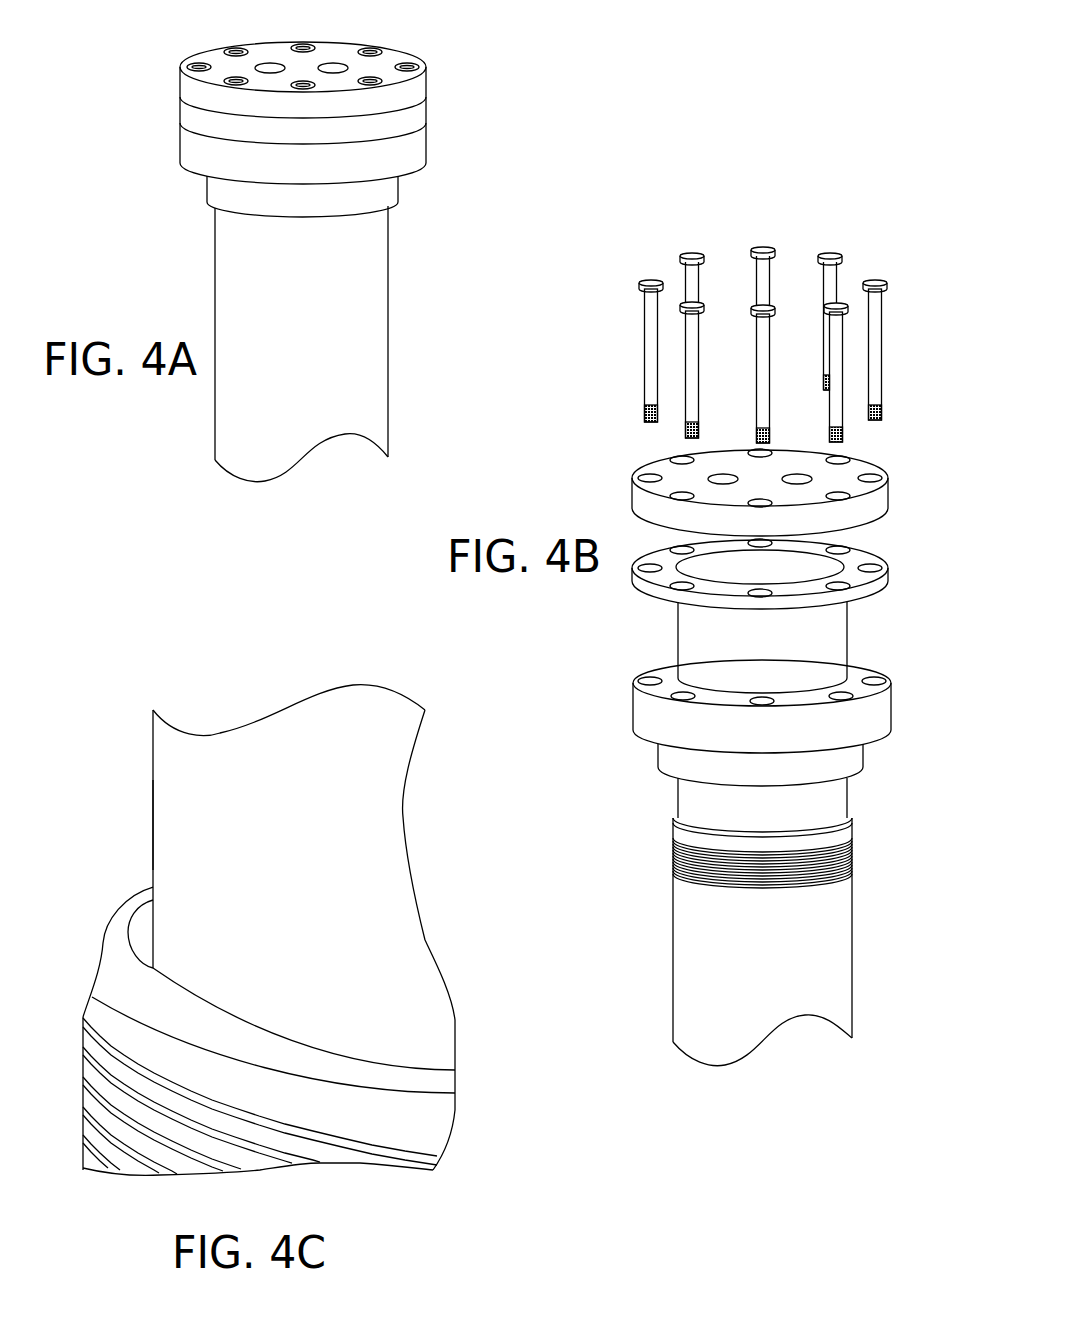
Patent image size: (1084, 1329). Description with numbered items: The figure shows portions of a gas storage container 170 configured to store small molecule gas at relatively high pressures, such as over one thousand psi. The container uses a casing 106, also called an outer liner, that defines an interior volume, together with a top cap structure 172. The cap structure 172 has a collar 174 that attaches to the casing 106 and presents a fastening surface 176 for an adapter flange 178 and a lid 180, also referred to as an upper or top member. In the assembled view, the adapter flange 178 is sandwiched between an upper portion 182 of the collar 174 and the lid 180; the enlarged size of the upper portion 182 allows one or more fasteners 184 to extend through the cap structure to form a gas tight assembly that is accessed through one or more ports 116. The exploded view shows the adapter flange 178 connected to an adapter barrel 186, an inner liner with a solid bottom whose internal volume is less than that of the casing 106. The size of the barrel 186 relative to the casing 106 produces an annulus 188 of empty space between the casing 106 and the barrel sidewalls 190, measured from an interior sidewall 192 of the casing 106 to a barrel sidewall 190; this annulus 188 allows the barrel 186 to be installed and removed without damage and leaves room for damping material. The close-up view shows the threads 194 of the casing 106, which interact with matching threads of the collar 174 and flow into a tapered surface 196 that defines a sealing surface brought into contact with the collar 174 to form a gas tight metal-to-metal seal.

In FIG. 4A, the casing 106 is at (388, 406).
In FIG. 4B, the casing 106 is at (767, 930).
In FIG. 4C, the casing 106 is at (455, 1125).
In FIG. 4A, the ports 116 is at (264, 54).
In FIG. 4B, the ports 116 is at (721, 467).
In FIG. 4A, the gas storage container 170 is at (150, 44).
In FIG. 4B, the gas storage container 170 is at (895, 234).
In FIG. 4C, the gas storage container 170 is at (121, 670).
In FIG. 4A, the top cap structure 172 is at (468, 128).
In FIG. 4B, the top cap structure 172 is at (910, 658).
In FIG. 4A, the collar 174 is at (322, 214).
In FIG. 4B, the collar 174 is at (780, 780).
In FIG. 4B, the fastening surface 176 is at (647, 661).
In FIG. 4A, the adapter flange 178 is at (322, 141).
In FIG. 4B, the adapter flange 178 is at (888, 577).
In FIG. 4A, the lid 180 is at (322, 115).
In FIG. 4B, the lid 180 is at (888, 490).
In FIG. 4A, the upper portion 182 is at (322, 173).
In FIG. 4B, the upper portion 182 is at (744, 695).
In FIG. 4B, the fasteners 184 is at (896, 371).
In FIG. 4B, the adapter barrel 186 is at (847, 645).
In FIG. 4C, the adapter barrel 186 is at (298, 869).
In FIG. 4B, the annulus 188 is at (667, 814).
In FIG. 4C, the annulus 188 is at (160, 915).
In FIG. 4C, the barrel sidewall 190 is at (152, 826).
In FIG. 4C, the interior sidewall 192 is at (138, 953).
In FIG. 4B, the threads 194 is at (866, 851).
In FIG. 4C, the threads 194 is at (216, 1099).
In FIG. 4C, the tapered surface 196 is at (295, 1029).